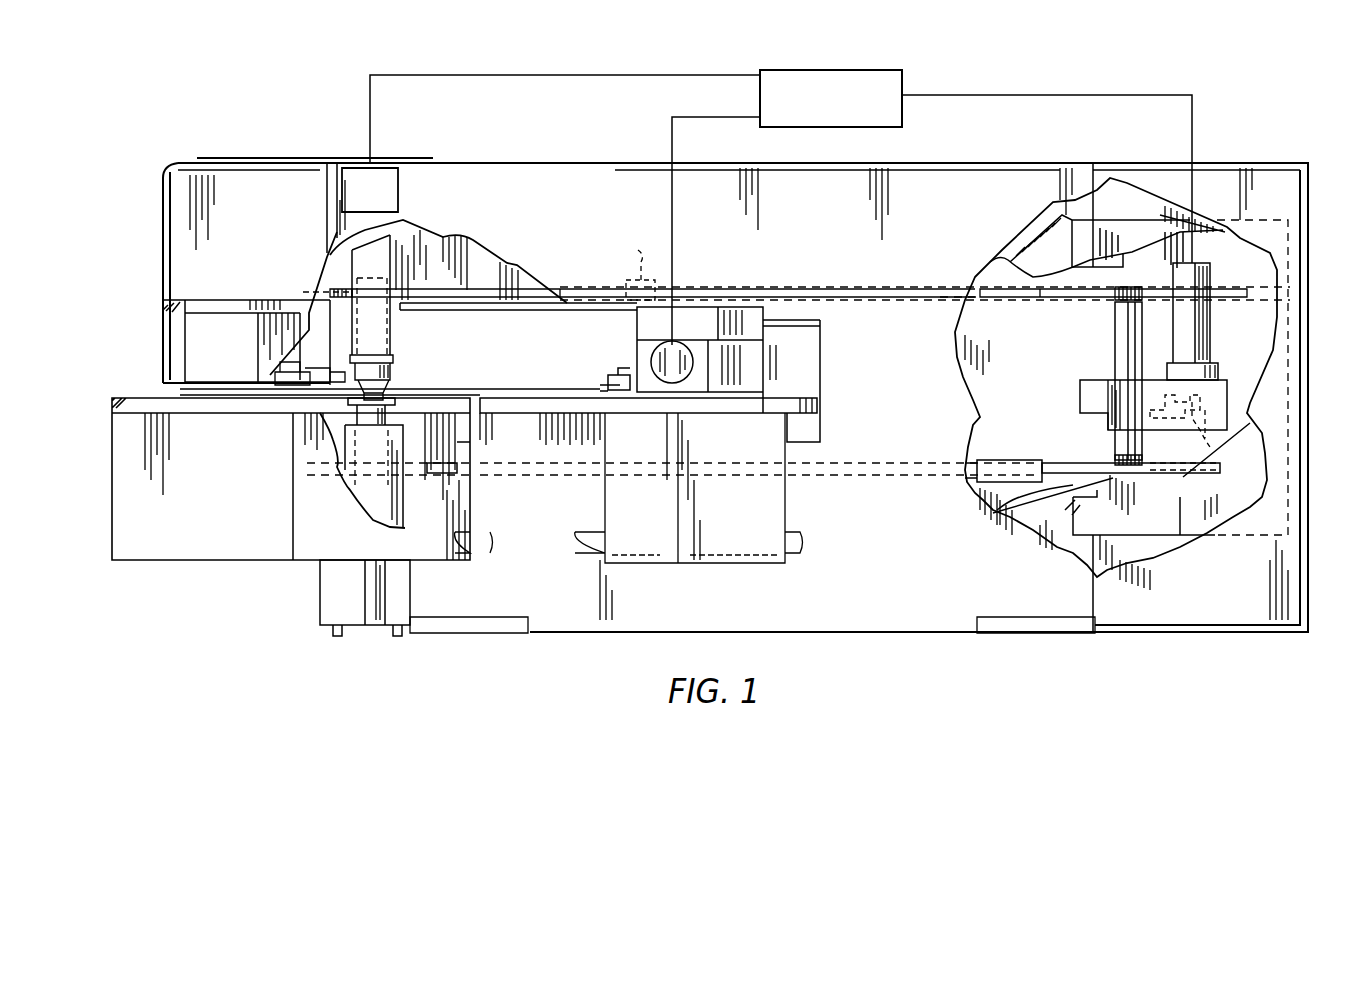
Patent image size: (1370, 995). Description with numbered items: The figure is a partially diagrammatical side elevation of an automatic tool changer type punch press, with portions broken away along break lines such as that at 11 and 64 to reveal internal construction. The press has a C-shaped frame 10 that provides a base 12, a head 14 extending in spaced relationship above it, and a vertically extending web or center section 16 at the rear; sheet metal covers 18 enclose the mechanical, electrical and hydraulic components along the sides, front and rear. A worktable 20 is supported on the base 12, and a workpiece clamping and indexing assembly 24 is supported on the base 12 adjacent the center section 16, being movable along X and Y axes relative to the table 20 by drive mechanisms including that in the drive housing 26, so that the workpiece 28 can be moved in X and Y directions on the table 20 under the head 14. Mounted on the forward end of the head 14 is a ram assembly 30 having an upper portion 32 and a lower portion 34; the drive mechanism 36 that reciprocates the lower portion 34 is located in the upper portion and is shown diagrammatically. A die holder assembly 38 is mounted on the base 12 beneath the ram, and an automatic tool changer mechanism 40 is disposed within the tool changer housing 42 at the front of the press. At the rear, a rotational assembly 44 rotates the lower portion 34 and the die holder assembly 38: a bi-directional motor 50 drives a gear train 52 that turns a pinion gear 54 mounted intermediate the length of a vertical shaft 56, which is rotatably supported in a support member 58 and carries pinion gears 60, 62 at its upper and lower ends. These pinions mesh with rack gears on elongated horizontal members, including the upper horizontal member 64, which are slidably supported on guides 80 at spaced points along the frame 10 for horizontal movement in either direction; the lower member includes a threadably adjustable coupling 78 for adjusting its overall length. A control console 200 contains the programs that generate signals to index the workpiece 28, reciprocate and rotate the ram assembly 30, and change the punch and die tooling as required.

The C-shaped frame 10 is at (557, 643).
The break line 11 is at (432, 480).
The base 12 is at (869, 530).
The head 14 is at (821, 280).
The center section 16 is at (875, 365).
The sheet metal covers 18 is at (519, 223).
The worktable 20 is at (140, 432).
The workpiece clamping and indexing assembly 24 is at (614, 378).
The drive housing 26 is at (697, 372).
The workpiece 28 is at (198, 394).
The ram assembly 30 is at (354, 262).
The upper portion 32 is at (350, 283).
The lower portion 34 is at (393, 362).
The drive mechanism 36 is at (379, 183).
The die holder assembly 38 is at (370, 477).
The automatic tool changer mechanism 40 is at (278, 370).
The tool changer housing 42 is at (208, 333).
The rotational assembly 44 is at (1212, 413).
The bi-directional motor 50 is at (1192, 348).
The gear train 52 is at (1207, 433).
The pinion gear 54 is at (1092, 413).
The vertical shaft 56 is at (1113, 457).
The support member 58 is at (1113, 350).
The upper pinion gear 60 is at (1127, 283).
The lower pinion gear 62 is at (1140, 477).
The upper horizontal member 64 is at (499, 281).
The threadably adjustable coupling 78 is at (1018, 465).
The guides 80 is at (640, 264).
The control console 200 is at (857, 70).